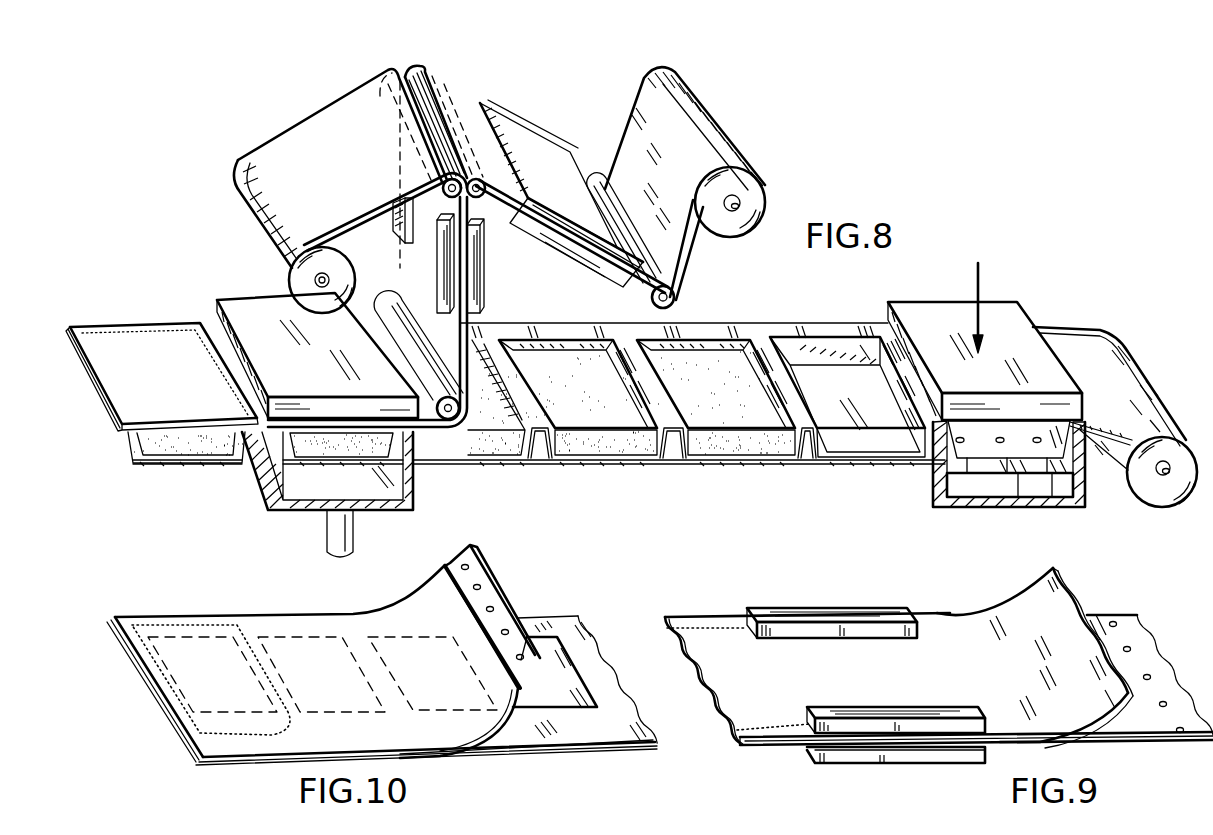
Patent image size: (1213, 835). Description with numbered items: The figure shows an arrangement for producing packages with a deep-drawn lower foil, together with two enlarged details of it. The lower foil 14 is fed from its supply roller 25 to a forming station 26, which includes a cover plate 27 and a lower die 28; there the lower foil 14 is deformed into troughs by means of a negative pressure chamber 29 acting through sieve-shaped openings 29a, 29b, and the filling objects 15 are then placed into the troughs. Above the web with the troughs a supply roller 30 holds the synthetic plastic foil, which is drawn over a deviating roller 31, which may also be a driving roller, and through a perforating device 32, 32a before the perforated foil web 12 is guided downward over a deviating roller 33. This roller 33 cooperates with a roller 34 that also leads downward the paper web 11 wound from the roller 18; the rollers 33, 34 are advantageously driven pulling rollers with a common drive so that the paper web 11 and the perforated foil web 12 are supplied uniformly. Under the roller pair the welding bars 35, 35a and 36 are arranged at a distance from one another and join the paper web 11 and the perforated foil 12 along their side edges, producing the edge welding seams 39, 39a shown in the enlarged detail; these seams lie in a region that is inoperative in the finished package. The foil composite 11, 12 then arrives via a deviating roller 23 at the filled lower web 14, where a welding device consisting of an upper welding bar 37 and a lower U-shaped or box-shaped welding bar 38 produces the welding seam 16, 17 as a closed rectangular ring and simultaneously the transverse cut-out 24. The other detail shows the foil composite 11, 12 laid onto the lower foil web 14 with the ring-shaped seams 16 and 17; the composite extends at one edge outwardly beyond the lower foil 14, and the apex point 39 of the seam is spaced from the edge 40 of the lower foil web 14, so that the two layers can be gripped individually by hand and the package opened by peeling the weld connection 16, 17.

In FIG. 8, the paper web 11 is at (323, 120).
In FIG. 10, the paper web 11 is at (413, 600).
In FIG. 9, the paper web 11 is at (1020, 600).
In FIG. 8, the perforated synthetic plastic foil web 12 is at (635, 122).
In FIG. 10, the perforated synthetic plastic foil web 12 is at (485, 595).
In FIG. 9, the perforated synthetic plastic foil web 12 is at (1152, 657).
In FIG. 8, the lower foil 14 is at (600, 455).
In FIG. 10, the lower foil 14 is at (593, 730).
In FIG. 8, the filling objects 15 is at (736, 440).
In FIG. 10, the welding seam 16 is at (160, 683).
In FIG. 10, the welding seam 17 is at (426, 753).
In FIG. 8, the roller 18 is at (300, 278).
In FIG. 8, the deviating roller 23 is at (462, 432).
In FIG. 8, the transverse cut-out 24 is at (390, 465).
In FIG. 8, the take-up roll 25 is at (1148, 488).
In FIG. 8, the forming station 26 is at (979, 280).
In FIG. 8, the cover plate 27 is at (920, 305).
In FIG. 8, the lower die 28 is at (947, 470).
In FIG. 8, the negative pressure chamber 29 is at (990, 490).
In FIG. 8, the sieve-shaped opening 29a is at (1018, 482).
In FIG. 8, the sieve-shaped opening 29b is at (1058, 482).
In FIG. 8, the supply roller 30 is at (754, 185).
In FIG. 8, the deviating roller 31 is at (675, 297).
In FIG. 8, the perforating device 32 is at (568, 258).
In FIG. 8, the perforating device 32a is at (556, 212).
In FIG. 8, the deviating roller 33 is at (513, 153).
In FIG. 8, the roller 34 is at (440, 178).
In FIG. 8, the welding bar 35 is at (437, 276).
In FIG. 9, the welding bar 35 is at (895, 707).
In FIG. 8, the welding bar 35a is at (480, 270).
In FIG. 9, the welding bar 35a is at (893, 763).
In FIG. 8, the welding bar 36 is at (390, 205).
In FIG. 9, the welding bar 36 is at (808, 617).
In FIG. 8, the upper welding bar 37 is at (230, 300).
In FIG. 8, the lower welding bar 38 is at (276, 510).
In FIG. 10, the welding seam 39 is at (252, 740).
In FIG. 9, the welding seam 39 is at (767, 733).
In FIG. 9, the welding seam 39a is at (718, 626).
In FIG. 10, the edge 40 is at (528, 748).